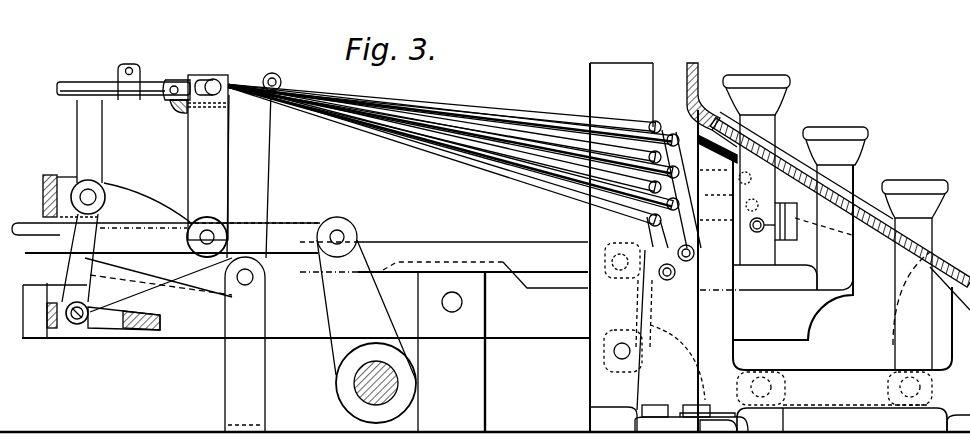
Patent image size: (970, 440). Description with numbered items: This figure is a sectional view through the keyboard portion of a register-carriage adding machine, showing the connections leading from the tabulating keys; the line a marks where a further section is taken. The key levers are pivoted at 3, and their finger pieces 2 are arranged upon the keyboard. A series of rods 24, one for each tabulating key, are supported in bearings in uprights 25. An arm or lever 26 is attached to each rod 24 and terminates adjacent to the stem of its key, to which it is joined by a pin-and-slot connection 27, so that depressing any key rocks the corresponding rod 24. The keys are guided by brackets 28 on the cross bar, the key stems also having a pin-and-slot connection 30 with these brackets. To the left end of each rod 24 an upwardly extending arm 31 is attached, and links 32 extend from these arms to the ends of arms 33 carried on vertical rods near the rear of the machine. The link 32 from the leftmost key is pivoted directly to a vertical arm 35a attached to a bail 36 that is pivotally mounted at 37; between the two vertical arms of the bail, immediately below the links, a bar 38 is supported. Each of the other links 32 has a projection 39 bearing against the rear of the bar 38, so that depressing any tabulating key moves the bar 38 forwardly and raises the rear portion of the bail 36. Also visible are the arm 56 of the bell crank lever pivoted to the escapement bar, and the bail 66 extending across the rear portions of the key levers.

The link 32 is at (102, 84).
The projection 39 is at (181, 110).
The bar 38 is at (219, 107).
The vertical arm 35a is at (208, 157).
The pivot 37 is at (214, 238).
The bail 36 is at (166, 236).
The bail 66 is at (158, 285).
The arm 56 is at (122, 311).
The arm 33 is at (487, 172).
The pivot 3 is at (452, 302).
The pin-and-slot connection 27 is at (366, 320).
The section line a is at (621, 247).
The bracket 28 is at (756, 170).
The finger piece 2 is at (835, 208).
The pin-and-slot connection 30 is at (774, 222).
The upwardly extending arm 31 is at (652, 234).
The rod 24 is at (656, 273).
The arm or lever 26 is at (690, 262).
The upright 25 is at (678, 376).